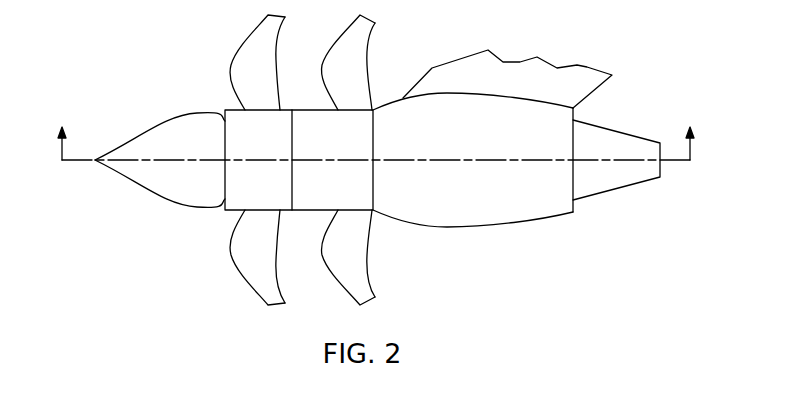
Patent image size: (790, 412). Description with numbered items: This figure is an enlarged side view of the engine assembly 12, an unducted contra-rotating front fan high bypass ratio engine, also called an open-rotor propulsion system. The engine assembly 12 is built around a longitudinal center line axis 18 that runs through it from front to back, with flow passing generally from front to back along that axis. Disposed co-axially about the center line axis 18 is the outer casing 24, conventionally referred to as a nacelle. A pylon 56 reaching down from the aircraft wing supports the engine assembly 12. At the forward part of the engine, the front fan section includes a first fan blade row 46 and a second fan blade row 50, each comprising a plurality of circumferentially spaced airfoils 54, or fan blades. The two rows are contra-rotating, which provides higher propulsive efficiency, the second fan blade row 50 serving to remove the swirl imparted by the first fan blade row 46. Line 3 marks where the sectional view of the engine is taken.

The section line 3- 3 is at (376, 134).
The engine assembly 12 is at (197, 92).
The longitudinal center line axis 18 is at (507, 157).
The outer casing 24 is at (480, 92).
The first fan blade row 46 is at (245, 41).
The second fan blade row 50 is at (333, 40).
The airfoils 54 is at (273, 35).
The pylon 56 is at (472, 65).